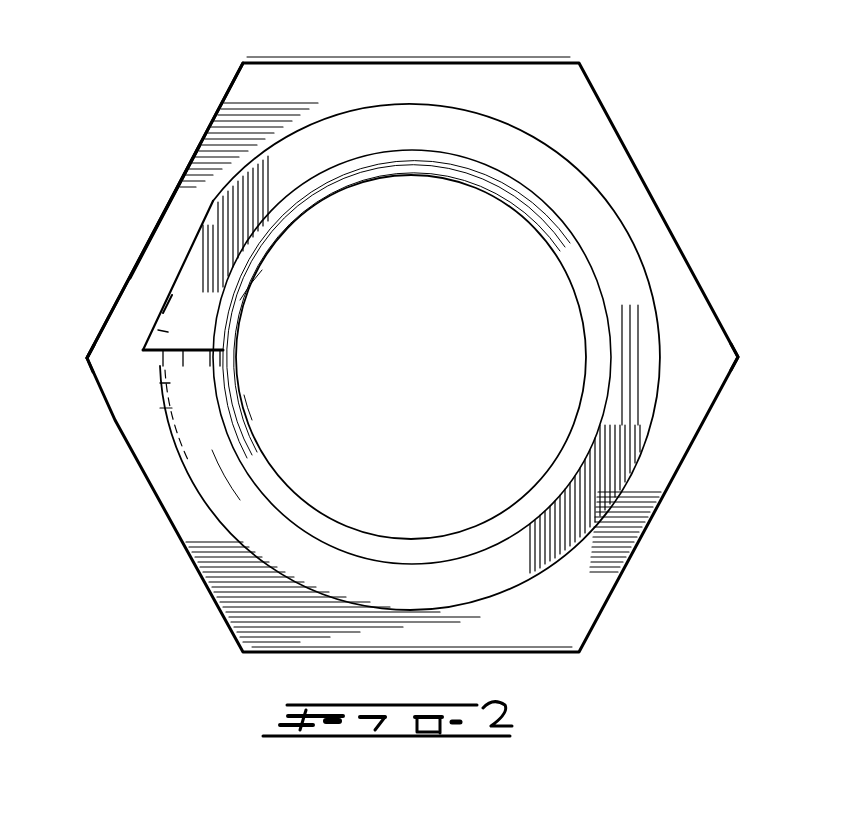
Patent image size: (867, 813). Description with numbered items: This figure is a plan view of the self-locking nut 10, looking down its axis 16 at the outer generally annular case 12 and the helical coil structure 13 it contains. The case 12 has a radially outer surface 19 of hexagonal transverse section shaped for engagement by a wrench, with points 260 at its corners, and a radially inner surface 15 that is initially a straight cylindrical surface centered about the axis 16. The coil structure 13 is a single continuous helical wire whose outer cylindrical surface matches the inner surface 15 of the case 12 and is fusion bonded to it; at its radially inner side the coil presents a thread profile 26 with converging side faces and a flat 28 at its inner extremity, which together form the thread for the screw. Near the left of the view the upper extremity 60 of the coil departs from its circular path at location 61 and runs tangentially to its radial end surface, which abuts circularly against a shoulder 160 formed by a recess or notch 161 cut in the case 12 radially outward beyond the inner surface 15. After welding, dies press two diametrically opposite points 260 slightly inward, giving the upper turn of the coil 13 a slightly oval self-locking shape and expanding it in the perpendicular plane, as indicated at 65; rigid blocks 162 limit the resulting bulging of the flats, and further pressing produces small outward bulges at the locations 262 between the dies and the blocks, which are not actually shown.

The lock nut 10 is at (703, 240).
The outer annular case 12 is at (176, 186).
The helical coil structure 13 is at (292, 208).
The radially inner surface 15 is at (212, 495).
The axis 16 is at (413, 358).
The radially outer surface 19 is at (157, 220).
The thread profile 26 is at (240, 410).
The flat 28 is at (248, 420).
The upper extremity of the coil 60 is at (200, 310).
The location 61 is at (253, 283).
The expansion of upper coil turn 65 is at (410, 104).
The shoulder 160 is at (158, 352).
The recess or notch 161 is at (172, 300).
The rigid blocks 162 is at (162, 318).
The points of hexagonal outer surface 260 is at (87, 357).
The bulging locations 262 is at (203, 138).